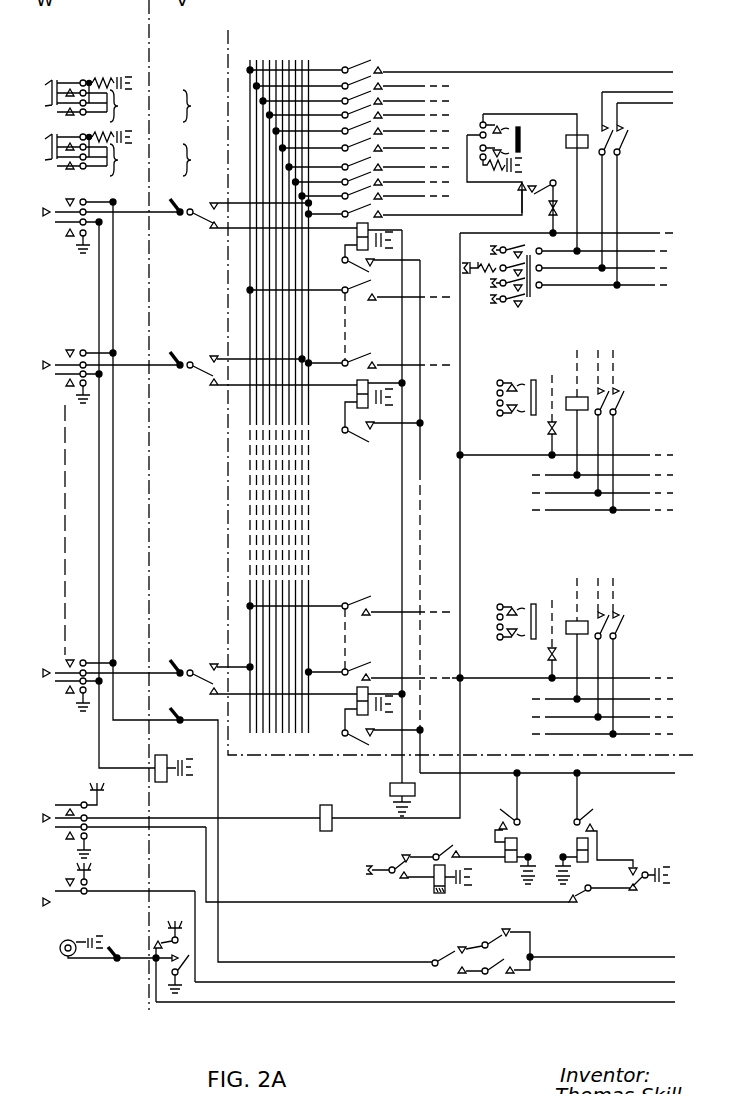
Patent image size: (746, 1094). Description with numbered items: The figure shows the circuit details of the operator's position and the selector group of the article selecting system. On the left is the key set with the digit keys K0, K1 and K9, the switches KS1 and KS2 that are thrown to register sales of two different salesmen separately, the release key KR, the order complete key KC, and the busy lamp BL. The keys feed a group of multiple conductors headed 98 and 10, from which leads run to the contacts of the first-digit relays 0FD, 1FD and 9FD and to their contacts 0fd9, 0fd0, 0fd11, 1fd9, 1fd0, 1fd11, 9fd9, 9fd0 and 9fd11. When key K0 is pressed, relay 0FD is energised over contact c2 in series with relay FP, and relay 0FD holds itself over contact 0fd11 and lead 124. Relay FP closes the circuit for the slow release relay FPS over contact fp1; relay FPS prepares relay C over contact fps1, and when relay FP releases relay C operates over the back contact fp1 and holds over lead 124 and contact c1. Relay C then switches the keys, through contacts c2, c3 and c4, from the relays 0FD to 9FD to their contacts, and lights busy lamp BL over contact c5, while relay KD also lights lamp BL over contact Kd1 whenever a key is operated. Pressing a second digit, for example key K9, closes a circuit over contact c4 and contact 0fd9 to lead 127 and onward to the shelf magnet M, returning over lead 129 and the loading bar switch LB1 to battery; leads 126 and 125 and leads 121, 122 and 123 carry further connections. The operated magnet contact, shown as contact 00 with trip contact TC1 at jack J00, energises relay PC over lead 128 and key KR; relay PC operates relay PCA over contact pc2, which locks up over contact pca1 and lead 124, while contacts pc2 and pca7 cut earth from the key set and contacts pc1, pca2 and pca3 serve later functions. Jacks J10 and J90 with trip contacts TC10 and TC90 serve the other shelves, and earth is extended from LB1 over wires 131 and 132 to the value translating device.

The bus conductor 98 is at (294, 51).
The bus conductor 10 is at (306, 388).
The lead 127 is at (528, 63).
The conductor 126 is at (637, 83).
The conductor 125 is at (645, 112).
The lead 128 is at (566, 224).
The lead 129 is at (604, 244).
The wire 131 is at (604, 261).
The wire 132 is at (604, 279).
The lead 124 is at (547, 766).
The conductor 121 is at (602, 948).
The conductor 122 is at (435, 973).
The conductor 123 is at (415, 993).
The switch KS1 is at (121, 93).
The switch KS2 is at (121, 147).
The key K0 is at (104, 218).
The key K1 is at (104, 369).
The key K9 is at (104, 678).
The release key KR is at (175, 820).
The order complete key KC is at (112, 884).
The busy lamp BL is at (101, 948).
The contact of relay KD Kd1 is at (164, 938).
The contact of relay C c2 is at (263, 212).
The contact of relay C c3 is at (263, 367).
The contact of relay C c4 is at (263, 676).
The contact of relay C c5 is at (187, 967).
The contact of relay C c1 is at (502, 809).
The contact of relay 0FD 0fd9 is at (328, 64).
The contact of relay 0FD 0fd0 is at (414, 203).
The relay 0FD is at (373, 233).
The contact of relay 0FD 0fd11 is at (381, 269).
The contact of relay 1FD 1fd9 is at (348, 318).
The contact of relay 1FD 1fd0 is at (378, 357).
The relay 1FD is at (373, 397).
The contact of relay 1FD 1fd11 is at (381, 436).
The contact of relay 9FD 9fd9 is at (348, 631).
The contact of relay 9FD 9fd0 is at (490, 669).
The relay 9FD is at (365, 704).
The contact of relay 9FD 9fd11 is at (381, 741).
The jack J00 is at (522, 181).
The magnet M is at (597, 413).
The contact 00 is at (537, 179).
The trip contact TC1 is at (541, 211).
The loading bar switch LB1 is at (502, 269).
The jack J10 is at (516, 390).
The trip contact TC10 is at (535, 416).
The jack J90 is at (516, 614).
The trip contact TC90 is at (533, 640).
The relay KD is at (173, 760).
The relay FP is at (411, 799).
The relay PC is at (322, 810).
The relay C is at (513, 861).
The contact of relay FPS fps1 is at (453, 850).
The contact of relay FP fp1 is at (400, 875).
The slow release relay FPS is at (439, 881).
The contact of relay PCA pca1 is at (603, 821).
The relay PCA is at (585, 861).
The contact of relay PC pc2 is at (630, 878).
The contact of relay PCA pca7 is at (588, 897).
The contact of relay PC pc1 is at (456, 964).
The contact of relay PCA pca2 is at (495, 942).
The contact of relay PCA pca3 is at (521, 966).